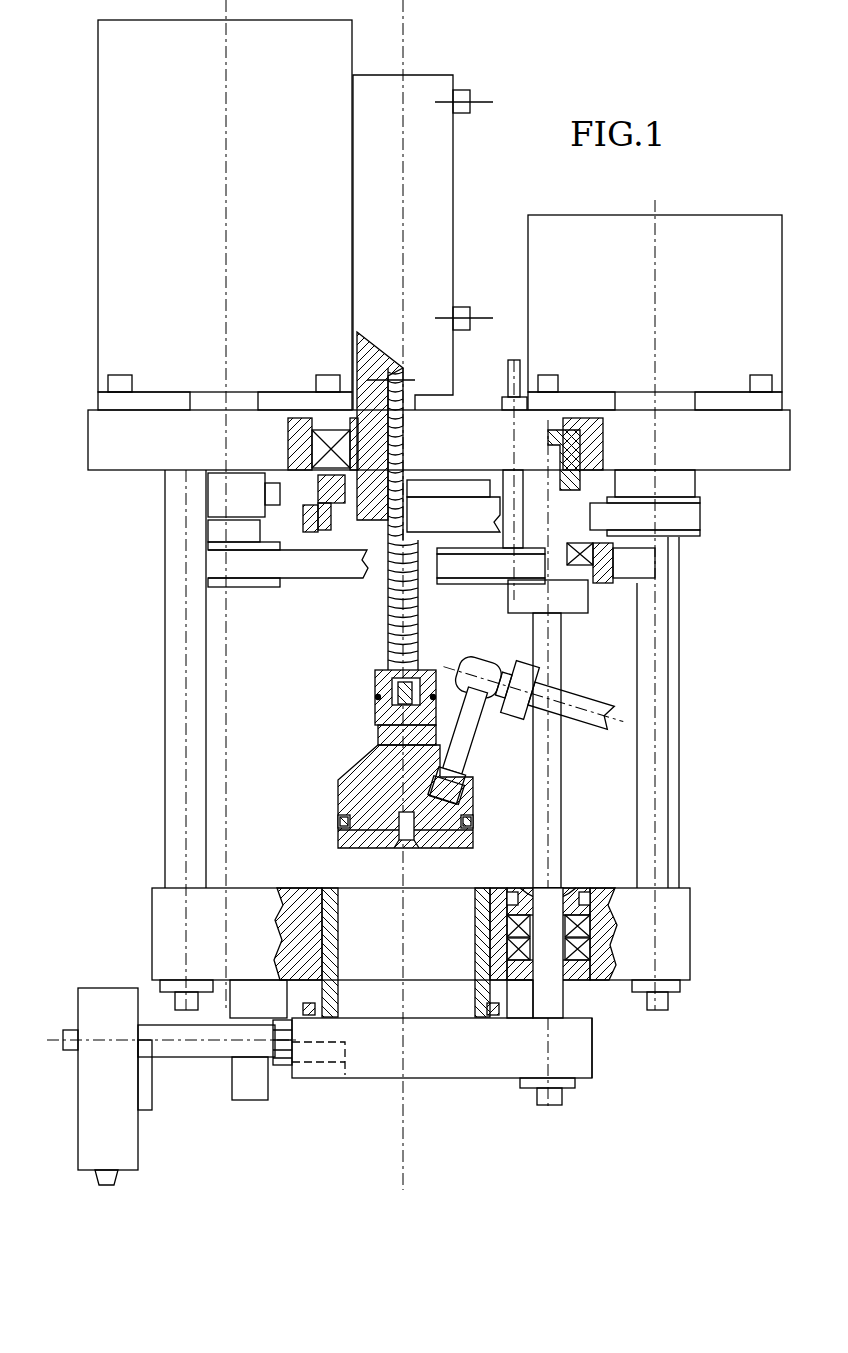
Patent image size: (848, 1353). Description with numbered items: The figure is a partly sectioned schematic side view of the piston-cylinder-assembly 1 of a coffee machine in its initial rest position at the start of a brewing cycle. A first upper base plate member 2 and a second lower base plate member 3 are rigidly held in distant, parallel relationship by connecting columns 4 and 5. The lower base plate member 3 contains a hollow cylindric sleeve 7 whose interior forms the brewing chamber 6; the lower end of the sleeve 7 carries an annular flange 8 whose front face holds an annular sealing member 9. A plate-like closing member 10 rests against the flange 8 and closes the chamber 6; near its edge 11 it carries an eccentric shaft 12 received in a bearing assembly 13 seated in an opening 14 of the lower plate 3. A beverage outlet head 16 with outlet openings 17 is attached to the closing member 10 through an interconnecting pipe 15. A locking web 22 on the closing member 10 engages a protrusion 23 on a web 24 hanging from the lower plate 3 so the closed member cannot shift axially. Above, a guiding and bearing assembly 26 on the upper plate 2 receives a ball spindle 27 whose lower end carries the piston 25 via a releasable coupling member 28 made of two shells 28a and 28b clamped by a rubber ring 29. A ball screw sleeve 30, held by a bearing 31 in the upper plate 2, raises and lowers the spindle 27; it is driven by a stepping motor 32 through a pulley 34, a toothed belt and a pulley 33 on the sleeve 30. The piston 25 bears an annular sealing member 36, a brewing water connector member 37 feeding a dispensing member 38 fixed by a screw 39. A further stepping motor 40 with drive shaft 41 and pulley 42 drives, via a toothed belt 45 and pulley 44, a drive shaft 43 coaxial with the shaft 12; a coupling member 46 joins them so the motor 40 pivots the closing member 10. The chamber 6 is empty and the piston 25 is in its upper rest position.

The piston-cylinder-assembly 1 is at (128, 635).
The first upper base plate member 2 is at (100, 440).
The second lower base plate member 3 is at (152, 920).
The connecting column 4 is at (176, 708).
The connecting column 5 is at (680, 750).
The brewing chamber 6 is at (336, 900).
The hollow cylindric sleeve 7 is at (481, 900).
The annular flange 8 is at (518, 1030).
The annular sealing member 9 is at (491, 1025).
The closing member 10 is at (390, 1078).
The edge 11 is at (594, 1050).
The shaft 12 is at (556, 995).
The bearing assembly 13 is at (590, 945).
The opening 14 is at (615, 915).
The interconnecting pipe 15 is at (194, 1057).
The beverage outlet head 16 is at (98, 1076).
The beverage outlet opening 17 is at (98, 1186).
The locking web 22 is at (290, 1030).
The protrusion 23 is at (283, 1068).
The web 24 is at (250, 1092).
The piston 25 is at (362, 792).
The guiding and bearing assembly 26 is at (445, 180).
The ball spindle 27 is at (388, 652).
The releasable coupling member 28 is at (352, 683).
The coupling shell 28a is at (378, 716).
The coupling shell 28b is at (462, 668).
The rubber ring 29 is at (378, 700).
The ball screw sleeve 30 is at (357, 350).
The bearing 31 is at (312, 448).
The stepping motor 32 is at (748, 235).
The pulley 33 is at (328, 518).
The pulley 34 is at (685, 488).
The annular sealing member 36 is at (338, 822).
The brewing water connector member 37 is at (480, 665).
The dispensing member 38 is at (386, 850).
The screw 39 is at (412, 845).
The stepping motor 40 is at (122, 145).
The drive shaft 41 is at (215, 490).
The pulley 42 is at (250, 587).
The drive shaft 43 is at (560, 632).
The pulley 44 is at (472, 582).
The toothed belt 45 is at (328, 578).
The coupling member 46 is at (562, 888).